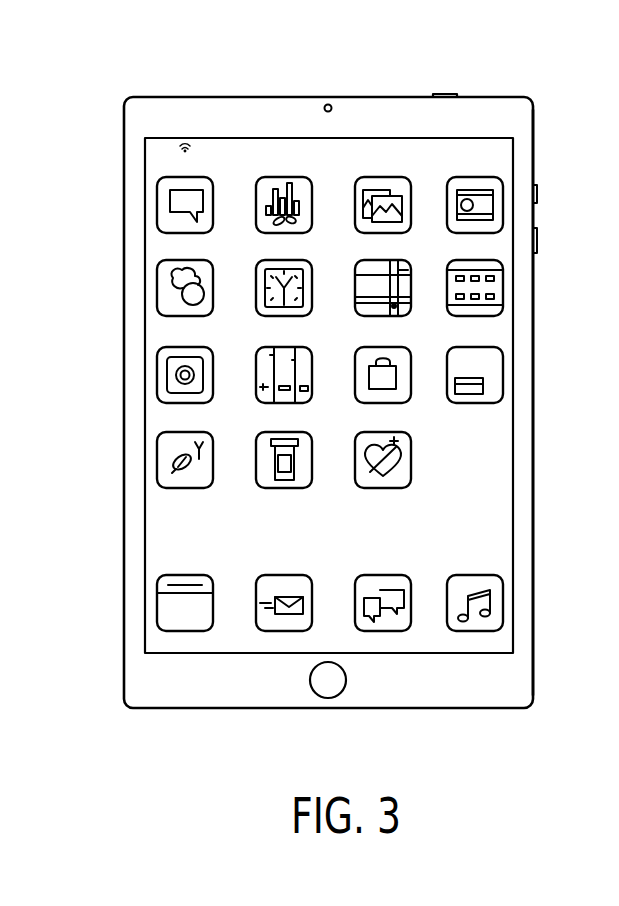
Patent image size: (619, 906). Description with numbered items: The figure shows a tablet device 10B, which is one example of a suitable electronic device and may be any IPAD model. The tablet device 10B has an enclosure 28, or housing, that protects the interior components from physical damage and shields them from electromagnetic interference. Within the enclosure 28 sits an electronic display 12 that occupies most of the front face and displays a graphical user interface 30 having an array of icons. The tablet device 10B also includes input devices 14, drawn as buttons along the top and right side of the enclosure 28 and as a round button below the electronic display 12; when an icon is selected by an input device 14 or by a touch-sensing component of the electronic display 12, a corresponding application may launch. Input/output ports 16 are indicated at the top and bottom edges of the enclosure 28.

The tablet device 10B is at (135, 59).
The electronic display 12 is at (513, 396).
The input devices 14 is at (445, 93).
The input/output (I/O) ports 16 is at (200, 97).
The enclosure 28 is at (533, 346).
The graphical user interface 30 is at (488, 476).